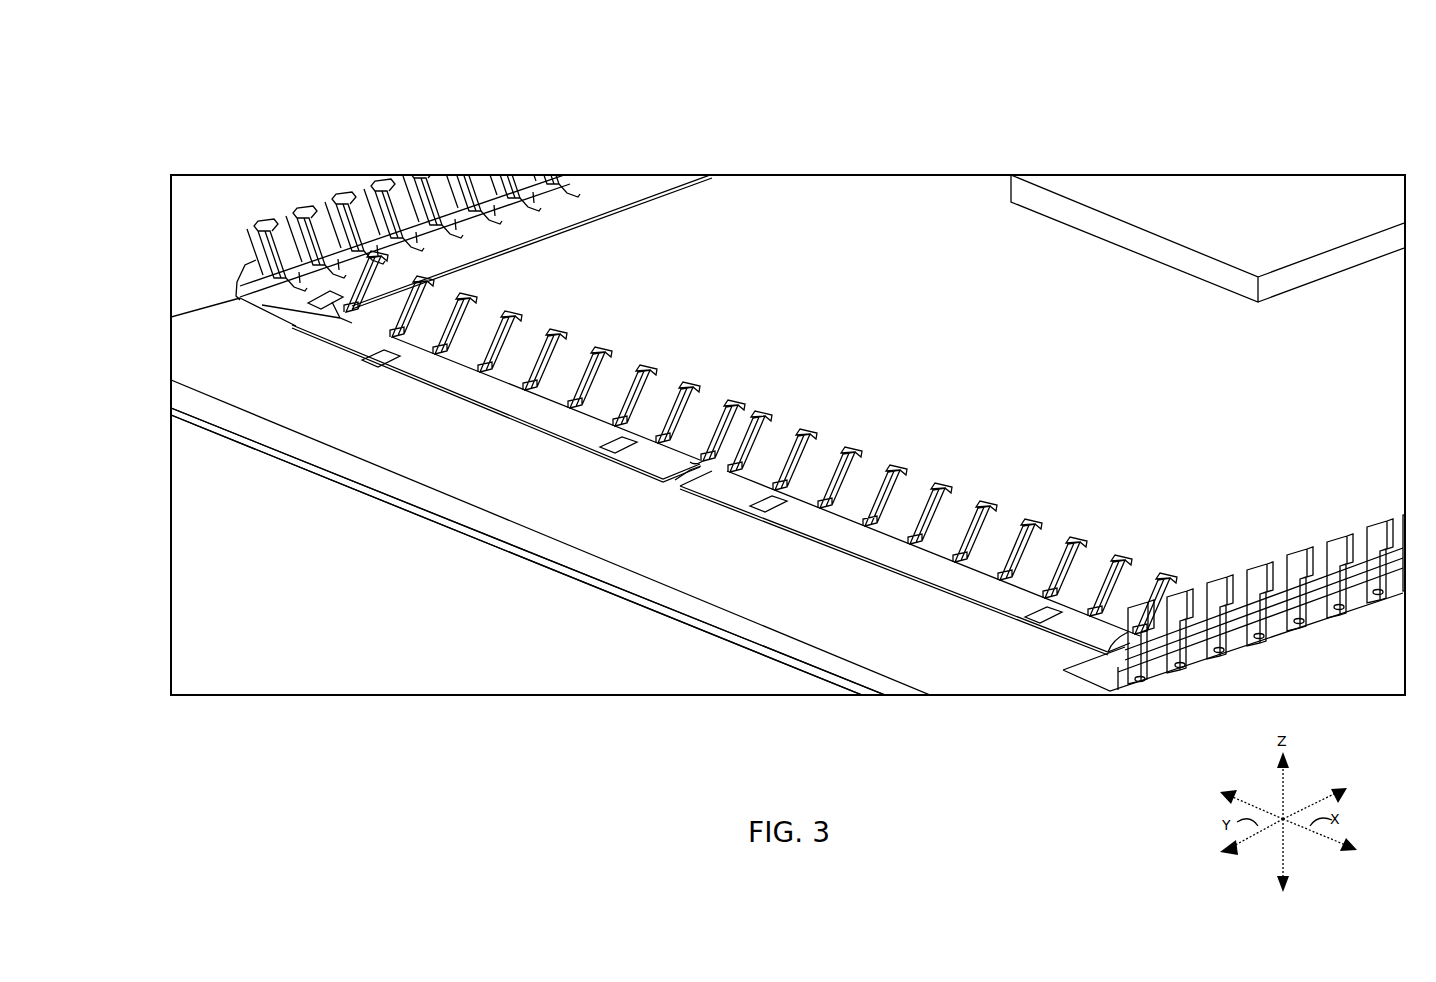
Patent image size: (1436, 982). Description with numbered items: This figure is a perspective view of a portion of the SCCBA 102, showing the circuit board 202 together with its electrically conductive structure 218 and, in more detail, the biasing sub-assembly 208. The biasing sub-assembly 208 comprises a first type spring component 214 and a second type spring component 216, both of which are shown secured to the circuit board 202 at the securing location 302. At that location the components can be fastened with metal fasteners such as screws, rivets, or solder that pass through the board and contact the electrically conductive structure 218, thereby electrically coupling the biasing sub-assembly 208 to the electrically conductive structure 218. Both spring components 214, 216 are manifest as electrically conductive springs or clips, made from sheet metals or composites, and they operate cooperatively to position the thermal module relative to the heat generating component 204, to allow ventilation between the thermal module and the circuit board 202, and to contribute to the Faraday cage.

The SCCBA 102 is at (300, 108).
The circuit board 202 is at (424, 531).
The heat generating component 204 is at (1122, 259).
The biasing sub-assembly 208 is at (462, 279).
The first type spring component 214 is at (607, 213).
The second type spring component 216 is at (510, 410).
The electrically conductive structure 218 is at (682, 625).
The securing location 302 is at (400, 366).